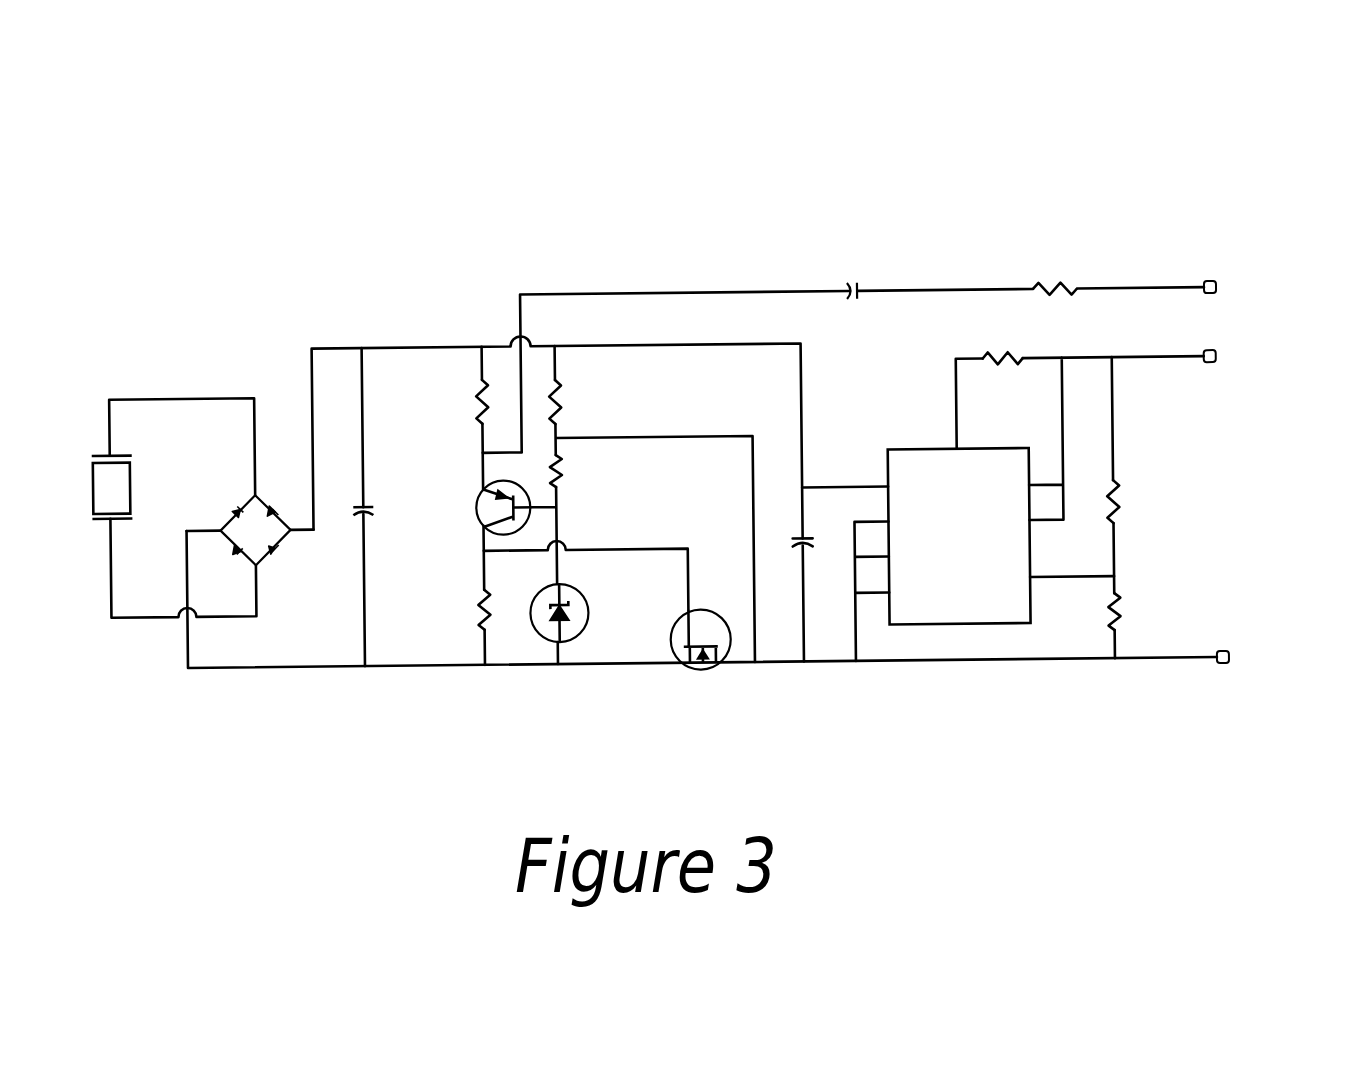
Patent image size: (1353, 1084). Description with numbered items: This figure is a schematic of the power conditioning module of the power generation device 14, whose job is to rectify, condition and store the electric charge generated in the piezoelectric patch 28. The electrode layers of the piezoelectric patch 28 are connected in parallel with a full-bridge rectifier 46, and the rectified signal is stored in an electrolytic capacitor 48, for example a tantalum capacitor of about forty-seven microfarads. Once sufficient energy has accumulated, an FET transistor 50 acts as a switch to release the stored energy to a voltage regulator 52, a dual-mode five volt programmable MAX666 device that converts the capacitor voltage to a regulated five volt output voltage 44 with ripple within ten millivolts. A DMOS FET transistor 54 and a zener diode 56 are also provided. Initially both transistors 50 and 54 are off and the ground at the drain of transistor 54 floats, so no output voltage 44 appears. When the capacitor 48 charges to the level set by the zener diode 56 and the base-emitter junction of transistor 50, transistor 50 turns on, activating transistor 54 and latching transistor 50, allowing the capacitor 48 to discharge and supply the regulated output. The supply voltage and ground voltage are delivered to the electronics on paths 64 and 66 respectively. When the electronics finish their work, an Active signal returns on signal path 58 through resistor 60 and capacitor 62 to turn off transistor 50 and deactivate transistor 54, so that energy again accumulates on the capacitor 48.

The power generation device 14 is at (712, 405).
The piezoelectric patch 28 is at (131, 487).
The output voltage 44 is at (1217, 511).
The full-bridge rectifier 46 is at (291, 532).
The electrolytic capacitor 48 is at (373, 511).
The FET transistor 50 is at (481, 497).
The voltage regulator 52 is at (984, 611).
The DMOS FET transistor 54 is at (700, 611).
The zener diode 56 is at (589, 614).
The signal path 58 is at (1220, 288).
The resistor 60 is at (1078, 290).
The capacitor 62 is at (855, 280).
The supply voltage path 64 is at (1219, 356).
The ground voltage path 66 is at (1229, 655).